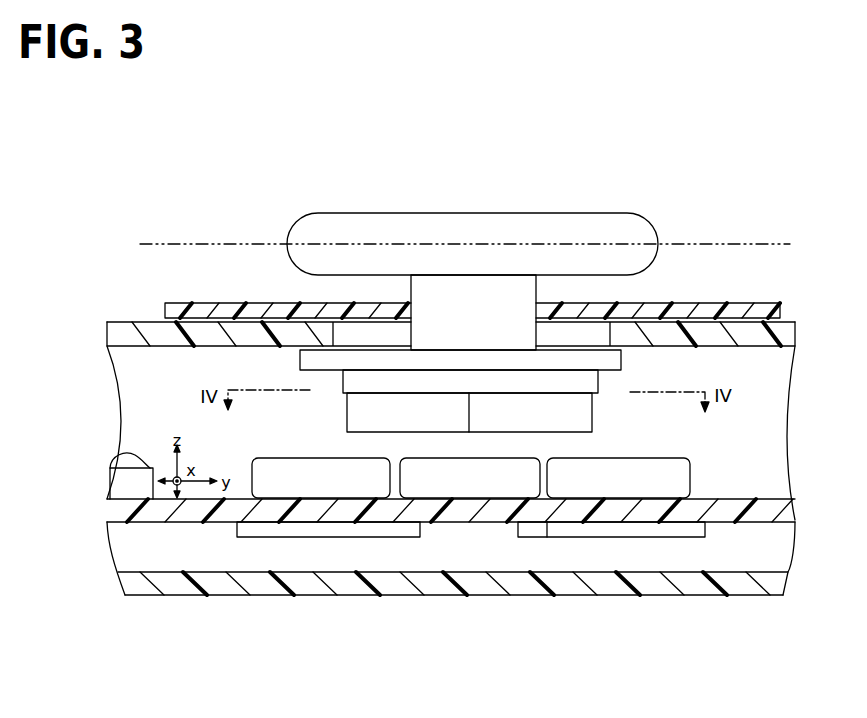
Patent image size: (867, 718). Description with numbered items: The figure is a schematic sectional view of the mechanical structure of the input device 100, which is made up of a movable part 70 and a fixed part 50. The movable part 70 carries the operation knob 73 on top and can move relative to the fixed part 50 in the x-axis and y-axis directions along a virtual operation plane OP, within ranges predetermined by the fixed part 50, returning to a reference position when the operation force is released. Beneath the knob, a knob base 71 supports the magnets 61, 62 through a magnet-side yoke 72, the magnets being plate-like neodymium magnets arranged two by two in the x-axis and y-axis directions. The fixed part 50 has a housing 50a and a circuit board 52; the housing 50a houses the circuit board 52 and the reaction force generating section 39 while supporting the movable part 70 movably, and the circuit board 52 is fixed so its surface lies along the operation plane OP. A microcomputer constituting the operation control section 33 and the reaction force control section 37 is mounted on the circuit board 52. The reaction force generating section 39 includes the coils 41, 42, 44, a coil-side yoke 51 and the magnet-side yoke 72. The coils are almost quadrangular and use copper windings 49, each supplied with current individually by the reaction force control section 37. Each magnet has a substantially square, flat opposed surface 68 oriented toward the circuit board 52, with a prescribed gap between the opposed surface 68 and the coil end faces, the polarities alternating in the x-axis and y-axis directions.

The input device 100 is at (655, 200).
The movable part 70 is at (533, 212).
The operation knob 73 is at (655, 227).
The virtual operation plane OP is at (177, 245).
The knob base 71 is at (336, 372).
The magnet-side yoke 72 is at (598, 383).
The magnet 62 is at (347, 423).
The magnet 61 is at (592, 422).
The operation control section 33 is at (87, 473).
The reaction force control section 37 is at (116, 456).
The reaction force generating section 39 is at (706, 471).
The fixed part 50 is at (451, 512).
The housing 50a is at (743, 580).
The coil-side yoke 51 is at (263, 537).
The winding 49 is at (665, 480).
The coil 42 is at (301, 480).
The circuit board 52 is at (462, 480).
The coil 44 is at (610, 480).
The coil 41 is at (462, 500).
The opposed surface 68 is at (372, 432).